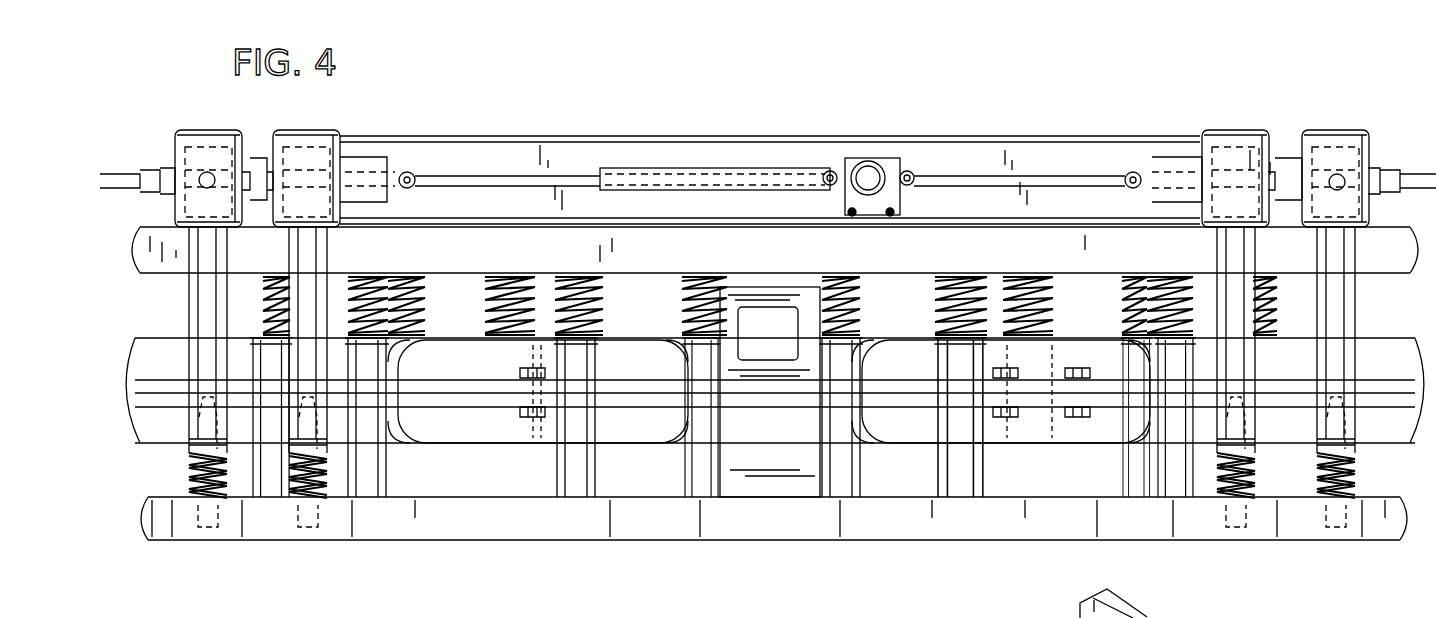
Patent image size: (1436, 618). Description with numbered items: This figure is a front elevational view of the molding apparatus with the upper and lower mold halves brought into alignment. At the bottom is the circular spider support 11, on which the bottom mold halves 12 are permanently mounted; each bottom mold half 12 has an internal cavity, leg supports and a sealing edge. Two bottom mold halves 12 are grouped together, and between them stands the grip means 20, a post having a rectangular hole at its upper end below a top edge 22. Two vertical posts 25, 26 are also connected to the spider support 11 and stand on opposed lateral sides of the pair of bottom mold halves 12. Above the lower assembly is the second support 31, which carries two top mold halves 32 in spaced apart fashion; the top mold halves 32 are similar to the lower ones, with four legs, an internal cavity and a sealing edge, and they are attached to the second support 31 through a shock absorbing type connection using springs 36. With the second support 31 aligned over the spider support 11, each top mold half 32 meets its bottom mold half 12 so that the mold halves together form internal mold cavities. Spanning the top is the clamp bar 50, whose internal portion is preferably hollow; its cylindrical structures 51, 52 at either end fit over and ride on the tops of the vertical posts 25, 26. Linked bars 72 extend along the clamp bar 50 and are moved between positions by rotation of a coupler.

The spider support 11 is at (445, 525).
The bottom mold half 12 is at (960, 475).
The grip means 20 is at (767, 343).
The top edge 22 is at (760, 295).
The vertical post 25 is at (305, 375).
The vertical post 26 is at (1240, 380).
The second support 31 is at (485, 245).
The top mold half 32 is at (640, 350).
The spring 36 is at (420, 305).
The clamp bar 50 is at (400, 137).
The cylindrical structure 51 is at (300, 148).
The cylindrical structure 52 is at (1235, 130).
The linked bar 72 is at (570, 172).